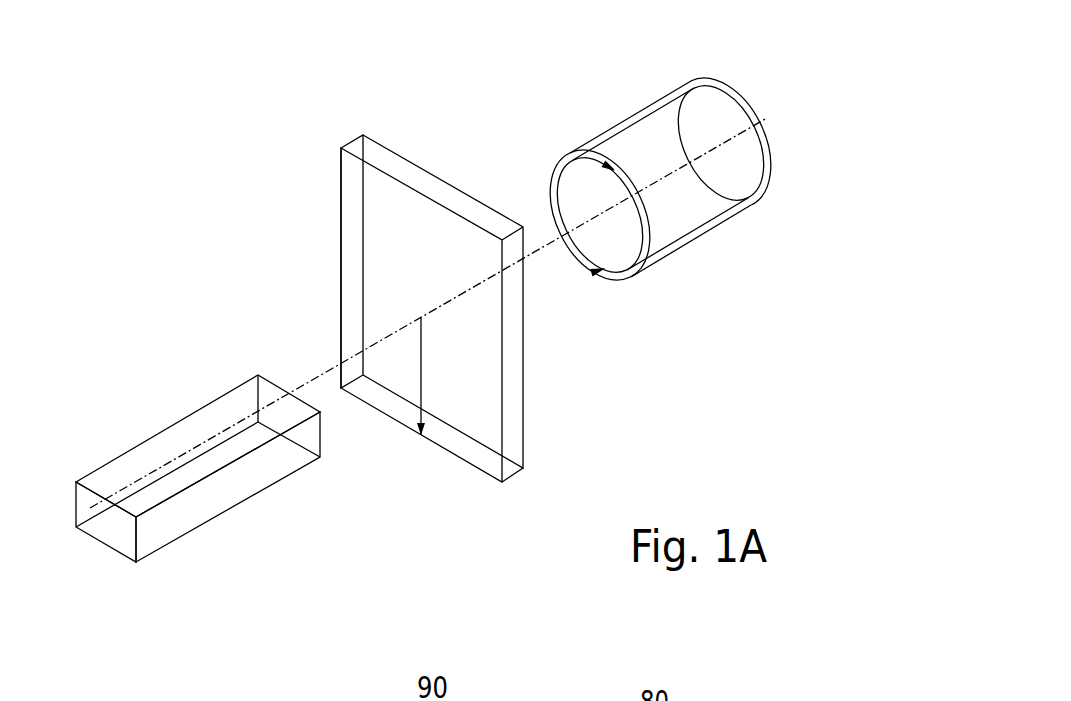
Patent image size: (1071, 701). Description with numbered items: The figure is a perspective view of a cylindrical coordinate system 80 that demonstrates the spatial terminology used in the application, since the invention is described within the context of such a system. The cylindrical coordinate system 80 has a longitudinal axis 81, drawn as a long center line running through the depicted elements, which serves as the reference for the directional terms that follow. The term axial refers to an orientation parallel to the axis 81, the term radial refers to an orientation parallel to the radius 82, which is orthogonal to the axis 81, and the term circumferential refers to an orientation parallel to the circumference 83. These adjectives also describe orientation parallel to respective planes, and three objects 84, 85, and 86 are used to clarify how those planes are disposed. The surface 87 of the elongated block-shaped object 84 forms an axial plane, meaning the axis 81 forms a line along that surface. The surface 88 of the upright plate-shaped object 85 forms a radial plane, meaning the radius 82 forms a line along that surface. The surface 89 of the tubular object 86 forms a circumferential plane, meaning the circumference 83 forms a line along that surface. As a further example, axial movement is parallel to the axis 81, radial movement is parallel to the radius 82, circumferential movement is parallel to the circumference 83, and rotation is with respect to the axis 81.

The cylindrical coordinate system 80 is at (302, 192).
The longitudinal axis 81 is at (759, 118).
The radius 82 is at (421, 365).
The circumference 83 is at (550, 178).
The object 84 is at (163, 547).
The object 85 is at (535, 476).
The object 86 is at (683, 247).
The surface 87 is at (158, 450).
The surface 88 is at (353, 265).
The surface 89 is at (625, 115).